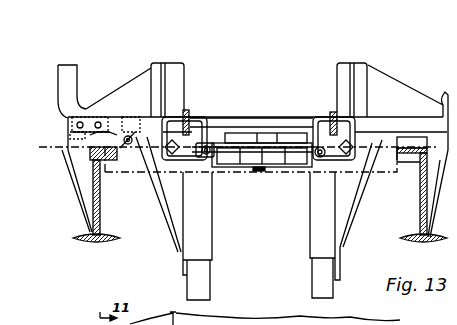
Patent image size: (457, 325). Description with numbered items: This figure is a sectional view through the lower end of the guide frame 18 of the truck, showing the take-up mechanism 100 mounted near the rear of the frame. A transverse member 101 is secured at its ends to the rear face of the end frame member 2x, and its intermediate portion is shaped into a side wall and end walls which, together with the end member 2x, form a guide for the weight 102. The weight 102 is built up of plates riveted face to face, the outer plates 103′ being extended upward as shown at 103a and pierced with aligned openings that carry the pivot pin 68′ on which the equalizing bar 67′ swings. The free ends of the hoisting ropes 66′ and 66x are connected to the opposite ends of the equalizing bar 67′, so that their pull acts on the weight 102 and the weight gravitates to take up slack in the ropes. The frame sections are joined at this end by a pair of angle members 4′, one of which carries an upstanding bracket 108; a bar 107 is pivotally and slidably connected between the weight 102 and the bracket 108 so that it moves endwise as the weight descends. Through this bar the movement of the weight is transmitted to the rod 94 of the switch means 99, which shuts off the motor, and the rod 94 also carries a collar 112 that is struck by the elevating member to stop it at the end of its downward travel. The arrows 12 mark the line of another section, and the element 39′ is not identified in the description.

The upstanding bracket 108 is at (93, 116).
The collar 112 is at (119, 120).
The rod 94 is at (141, 117).
The spring post 39′ is at (186, 110).
The equalizing bar 67′ is at (231, 150).
The end frame member 2x is at (245, 125).
The pivot pin 68′ is at (262, 147).
The upward extension of outer plate 103a is at (273, 142).
The outer plate 103′ is at (294, 140).
The section line 12 is at (39, 127).
The switch means 99 is at (112, 164).
The bar 107 is at (158, 150).
The rope 66x is at (200, 158).
The transverse member 101 is at (237, 163).
The take-up mechanism 100 is at (258, 165).
The weight 102 is at (292, 163).
The rope 66′ is at (325, 158).
The angle member 4′ is at (57, 167).
The guide frame 18 is at (95, 240).